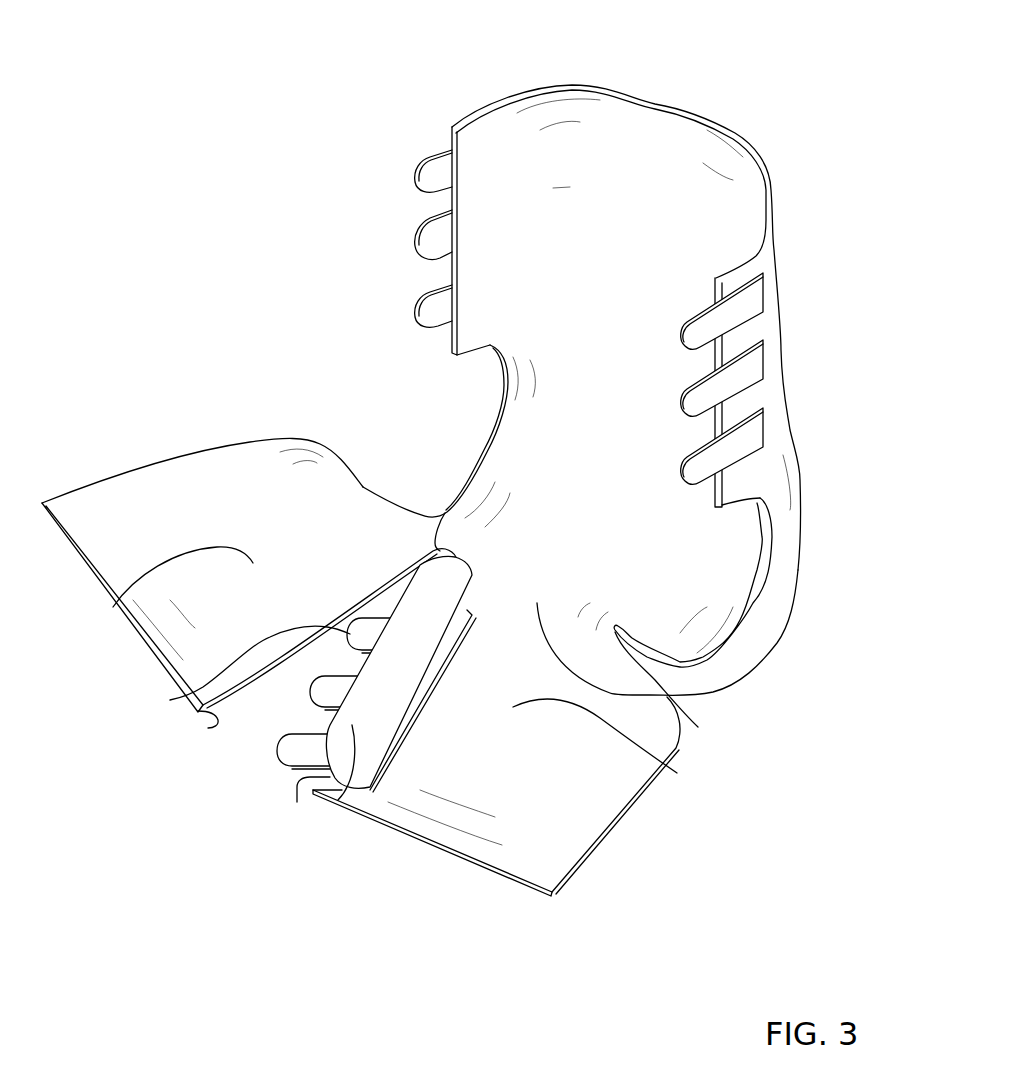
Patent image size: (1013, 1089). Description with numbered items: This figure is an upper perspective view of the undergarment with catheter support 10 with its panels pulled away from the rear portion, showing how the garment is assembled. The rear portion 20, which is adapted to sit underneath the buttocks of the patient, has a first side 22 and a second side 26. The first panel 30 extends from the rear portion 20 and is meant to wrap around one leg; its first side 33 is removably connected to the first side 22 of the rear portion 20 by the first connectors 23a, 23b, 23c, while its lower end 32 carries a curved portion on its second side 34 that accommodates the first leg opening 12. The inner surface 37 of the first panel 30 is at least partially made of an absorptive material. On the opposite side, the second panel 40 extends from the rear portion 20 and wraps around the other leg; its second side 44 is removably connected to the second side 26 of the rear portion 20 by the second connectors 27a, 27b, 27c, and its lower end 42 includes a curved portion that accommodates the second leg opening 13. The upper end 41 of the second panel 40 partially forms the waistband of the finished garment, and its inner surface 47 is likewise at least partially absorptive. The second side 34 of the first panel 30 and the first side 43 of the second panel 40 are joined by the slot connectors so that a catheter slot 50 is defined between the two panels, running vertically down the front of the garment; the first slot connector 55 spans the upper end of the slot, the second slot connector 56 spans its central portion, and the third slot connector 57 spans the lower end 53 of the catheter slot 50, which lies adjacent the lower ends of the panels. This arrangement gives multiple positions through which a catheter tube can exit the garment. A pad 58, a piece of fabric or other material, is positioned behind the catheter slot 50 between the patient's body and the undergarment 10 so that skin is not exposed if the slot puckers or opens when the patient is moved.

The undergarment with catheter support 10 is at (236, 98).
The first leg opening 12 is at (430, 440).
The second leg opening 13 is at (707, 575).
The rear portion 20 is at (665, 147).
The first side of the rear portion 22 is at (452, 208).
The first connector 23a is at (413, 176).
The first connector 23b is at (413, 250).
The first connector 23c is at (410, 312).
The second side of the rear portion 26 is at (726, 416).
The second connector 27a is at (738, 303).
The second connector 27b is at (730, 372).
The second connector 27c is at (738, 440).
The first panel 30 is at (198, 500).
The lower end of the first panel 32 is at (347, 513).
The first side of the first panel 33 is at (220, 447).
The second side of the first panel 34 is at (208, 728).
The inner surface of the first panel 37 is at (118, 602).
The second panel 40 is at (535, 742).
The upper end of the second panel 41 is at (453, 853).
The lower end of the second panel 42 is at (698, 727).
The first side of the second panel 43 is at (297, 790).
The second side of the second panel 44 is at (582, 856).
The inner surface of the second panel 47 is at (690, 775).
The catheter slot 50 is at (322, 656).
The lower end of the catheter slot 53 is at (447, 507).
The first slot connector 55 is at (310, 767).
The second slot connector 56 is at (318, 707).
The third slot connector 57 is at (170, 700).
The pad 58 is at (332, 790).